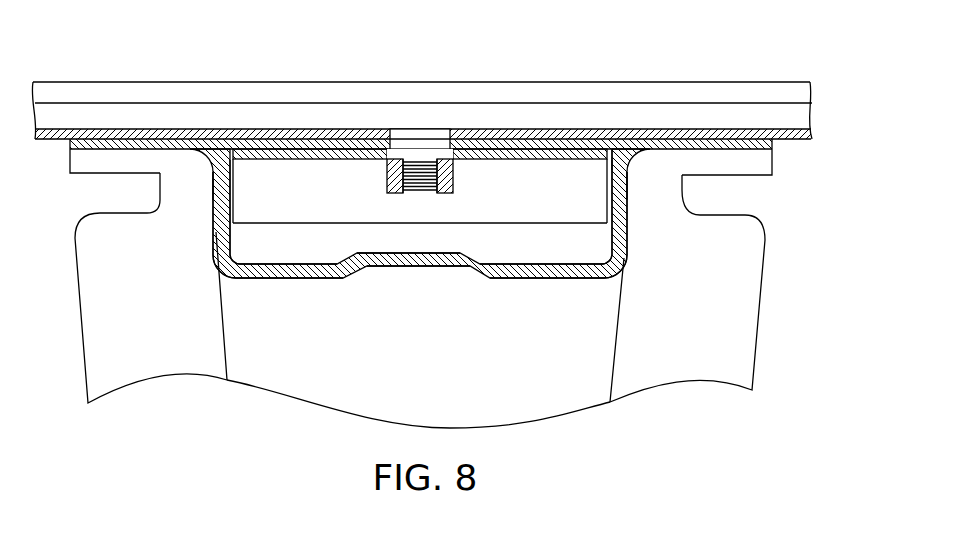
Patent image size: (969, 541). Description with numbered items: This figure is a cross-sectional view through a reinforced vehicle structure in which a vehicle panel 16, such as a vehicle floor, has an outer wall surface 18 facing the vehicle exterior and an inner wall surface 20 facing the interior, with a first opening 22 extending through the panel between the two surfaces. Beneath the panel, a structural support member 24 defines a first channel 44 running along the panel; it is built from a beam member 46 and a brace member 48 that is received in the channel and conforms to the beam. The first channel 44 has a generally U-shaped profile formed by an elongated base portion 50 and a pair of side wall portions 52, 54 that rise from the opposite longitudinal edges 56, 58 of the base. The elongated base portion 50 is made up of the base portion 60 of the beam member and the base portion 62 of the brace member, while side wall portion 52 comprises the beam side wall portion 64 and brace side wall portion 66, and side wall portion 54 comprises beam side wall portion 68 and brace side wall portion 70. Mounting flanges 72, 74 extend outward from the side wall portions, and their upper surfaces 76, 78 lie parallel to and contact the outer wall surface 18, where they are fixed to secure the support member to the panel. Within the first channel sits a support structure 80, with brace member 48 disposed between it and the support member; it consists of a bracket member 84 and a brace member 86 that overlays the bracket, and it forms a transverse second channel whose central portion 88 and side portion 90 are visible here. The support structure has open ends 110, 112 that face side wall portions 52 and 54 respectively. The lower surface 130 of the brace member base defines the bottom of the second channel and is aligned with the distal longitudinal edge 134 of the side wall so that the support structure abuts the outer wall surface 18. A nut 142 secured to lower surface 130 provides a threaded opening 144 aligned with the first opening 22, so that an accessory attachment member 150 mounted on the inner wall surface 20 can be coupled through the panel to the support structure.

The vehicle panel 16 is at (813, 143).
The outer wall surface 18 is at (790, 149).
The inner wall surface 20 is at (760, 138).
The first opening 22 is at (437, 135).
The structural support member 24 is at (670, 250).
The first channel 44 is at (306, 264).
The beam member 46 is at (330, 290).
The brace member 48 is at (323, 255).
The elongated base portion 50 is at (545, 282).
The side wall portion 52 is at (205, 239).
The side wall portion 54 is at (636, 226).
The longitudinal edge 56 is at (222, 275).
The longitudinal edge 58 is at (620, 272).
The base portion of the beam member 60 is at (575, 282).
The base portion of the brace member 62 is at (547, 268).
The side wall portion of the beam member 64 is at (217, 247).
The side wall portion of the brace member 66 is at (230, 241).
The side wall portion of the beam member 68 is at (627, 250).
The side wall portion of the brace member 70 is at (612, 205).
The mounting flange 72 is at (112, 152).
The mounting flange 74 is at (727, 152).
The upper surface 76 is at (93, 138).
The upper surface 78 is at (691, 144).
The support structure 80 is at (496, 232).
The bracket member 84 is at (521, 142).
The brace member 86 is at (510, 152).
The central portion 88 is at (306, 152).
The side portion 90 is at (477, 170).
The open end 110 is at (213, 190).
The open end 112 is at (630, 180).
The lower surface 130 is at (227, 147).
The distal longitudinal edge 134 is at (616, 150).
The nut 142 is at (450, 186).
The threaded opening 144 is at (412, 188).
The accessory attachment member 150 is at (728, 80).